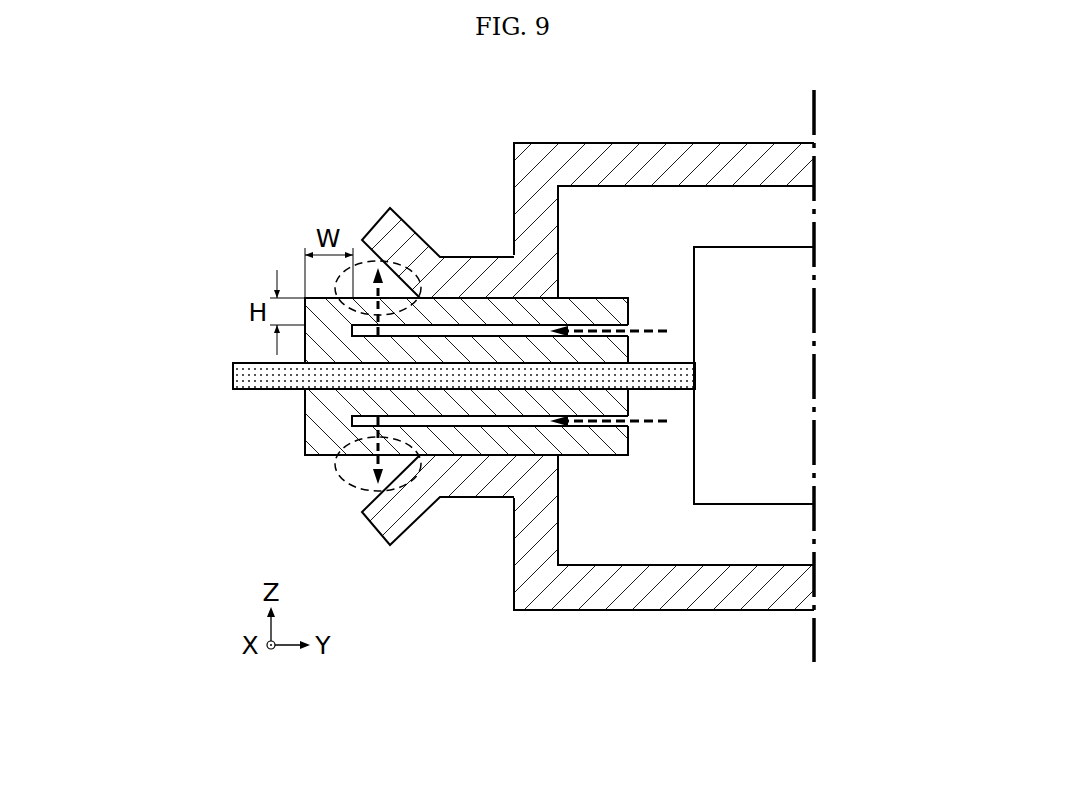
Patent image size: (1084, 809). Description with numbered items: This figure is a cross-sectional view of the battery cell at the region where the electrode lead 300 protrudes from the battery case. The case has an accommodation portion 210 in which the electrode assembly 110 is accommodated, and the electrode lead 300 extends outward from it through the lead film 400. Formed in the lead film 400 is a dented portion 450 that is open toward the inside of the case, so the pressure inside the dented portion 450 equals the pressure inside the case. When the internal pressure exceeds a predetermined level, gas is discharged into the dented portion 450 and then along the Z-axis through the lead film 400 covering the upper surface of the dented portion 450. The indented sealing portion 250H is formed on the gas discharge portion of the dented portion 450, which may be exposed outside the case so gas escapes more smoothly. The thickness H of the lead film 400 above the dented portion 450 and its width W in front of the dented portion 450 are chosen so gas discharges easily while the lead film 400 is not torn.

The electrode assembly 110 is at (752, 252).
The accommodation portion 210 is at (642, 150).
The electrode lead 300 is at (250, 368).
The lead film 400 is at (443, 312).
The dented portion 450 is at (493, 332).
The indented sealing portion 250H is at (394, 260).